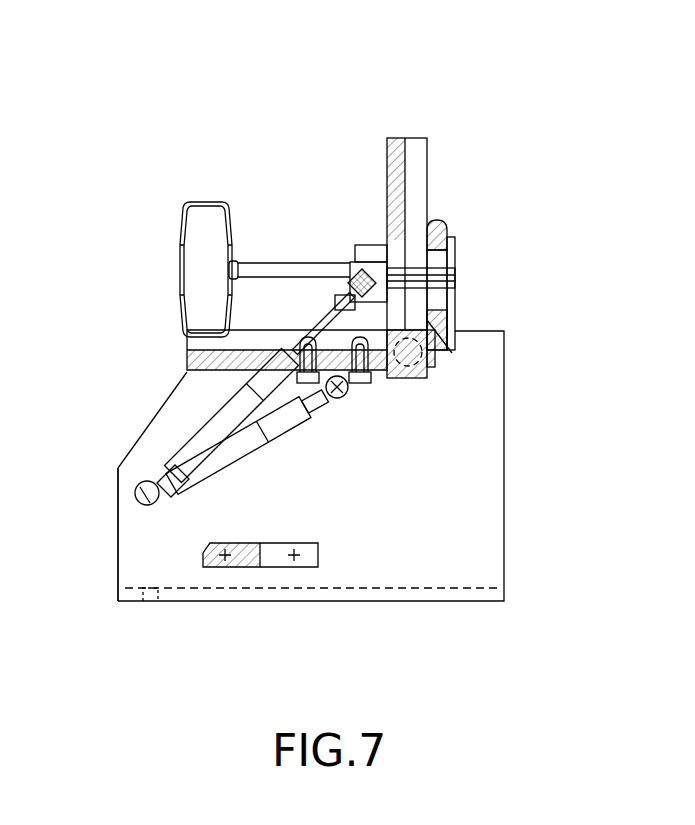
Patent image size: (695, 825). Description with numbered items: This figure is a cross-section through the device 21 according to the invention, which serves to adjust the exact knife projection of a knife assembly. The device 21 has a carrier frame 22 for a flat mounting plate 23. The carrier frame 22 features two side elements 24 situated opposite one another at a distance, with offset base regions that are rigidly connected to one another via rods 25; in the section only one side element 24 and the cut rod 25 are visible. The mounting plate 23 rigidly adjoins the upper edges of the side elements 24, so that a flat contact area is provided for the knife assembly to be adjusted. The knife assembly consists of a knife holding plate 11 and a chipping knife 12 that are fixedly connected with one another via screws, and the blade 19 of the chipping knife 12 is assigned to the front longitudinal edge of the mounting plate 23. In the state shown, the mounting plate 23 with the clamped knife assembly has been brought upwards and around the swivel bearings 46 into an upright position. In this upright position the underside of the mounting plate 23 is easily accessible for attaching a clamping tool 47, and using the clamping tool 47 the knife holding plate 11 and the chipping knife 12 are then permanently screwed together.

The device 21 is at (548, 138).
The carrier frame 22 is at (505, 508).
The mounting plate 23 is at (403, 138).
The knife holding plate 11 is at (437, 225).
The chipping knife 12 is at (455, 290).
The blade 19 is at (455, 355).
The swivel bearings 46 is at (405, 366).
The clamping tool 47 is at (180, 232).
The side elements 24 is at (118, 530).
The rods 25 is at (255, 567).